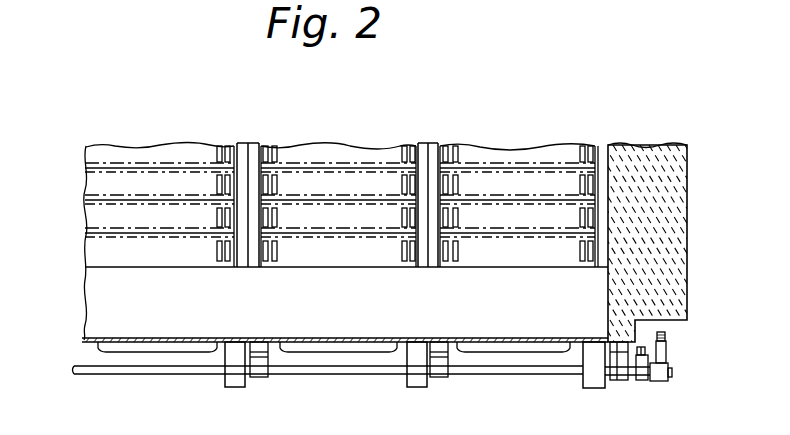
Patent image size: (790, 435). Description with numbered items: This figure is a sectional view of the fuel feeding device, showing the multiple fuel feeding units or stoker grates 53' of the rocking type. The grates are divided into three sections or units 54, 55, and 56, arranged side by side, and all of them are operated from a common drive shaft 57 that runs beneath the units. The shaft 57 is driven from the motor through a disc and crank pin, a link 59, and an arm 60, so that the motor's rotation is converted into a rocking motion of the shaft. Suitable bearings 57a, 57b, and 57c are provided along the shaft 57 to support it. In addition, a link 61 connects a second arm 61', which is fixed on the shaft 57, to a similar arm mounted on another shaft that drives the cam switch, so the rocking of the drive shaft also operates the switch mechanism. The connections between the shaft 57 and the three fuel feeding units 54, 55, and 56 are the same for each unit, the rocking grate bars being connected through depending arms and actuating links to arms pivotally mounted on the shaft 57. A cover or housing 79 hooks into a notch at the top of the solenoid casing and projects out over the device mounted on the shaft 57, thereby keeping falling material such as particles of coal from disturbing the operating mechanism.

The stoker grates 53' is at (409, 247).
The fuel feeding unit 54 is at (159, 193).
The fuel feeding unit 55 is at (338, 195).
The fuel feeding unit 56 is at (519, 194).
The drive shaft 57 is at (536, 378).
The bearing 57a is at (263, 379).
The bearing 57b is at (442, 373).
The bearing 57c is at (620, 384).
The link 59 is at (666, 337).
The arm 60 is at (666, 352).
The link 61 is at (680, 374).
The second arm 61' is at (665, 375).
The cover or housing 79 is at (228, 385).